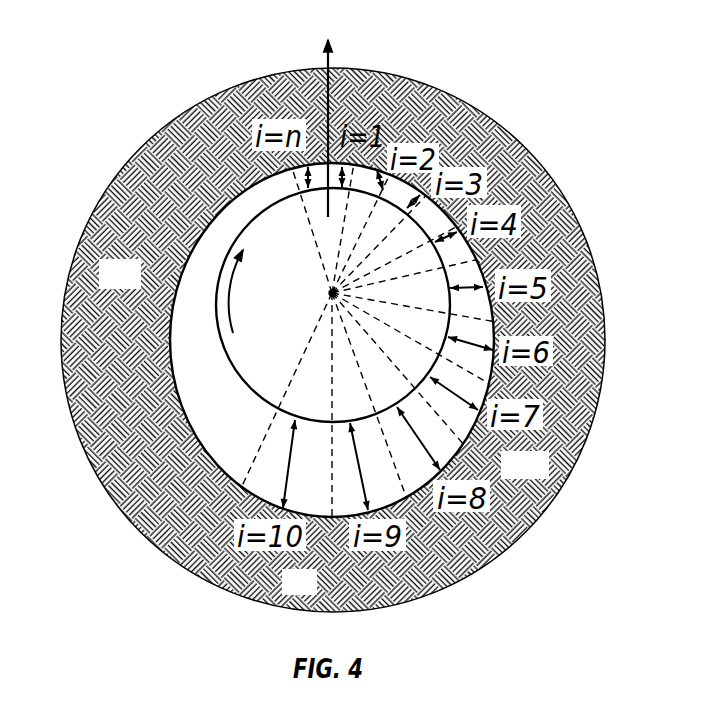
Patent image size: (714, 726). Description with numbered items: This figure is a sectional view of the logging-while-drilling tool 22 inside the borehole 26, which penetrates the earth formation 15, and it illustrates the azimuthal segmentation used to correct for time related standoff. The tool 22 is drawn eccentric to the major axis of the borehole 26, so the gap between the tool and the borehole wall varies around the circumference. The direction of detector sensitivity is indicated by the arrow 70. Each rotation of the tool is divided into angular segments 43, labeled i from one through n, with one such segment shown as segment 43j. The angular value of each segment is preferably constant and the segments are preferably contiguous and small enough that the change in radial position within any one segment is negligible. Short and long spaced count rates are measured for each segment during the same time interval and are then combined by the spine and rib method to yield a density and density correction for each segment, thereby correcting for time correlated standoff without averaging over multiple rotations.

The earth formation 15 is at (333, 340).
The LWD tool 22 is at (270, 375).
The borehole 26 is at (225, 433).
The angular segments 43 is at (297, 421).
The angular segment j 43j is at (430, 450).
The arrow indicating detector sensitivity 70 is at (333, 53).